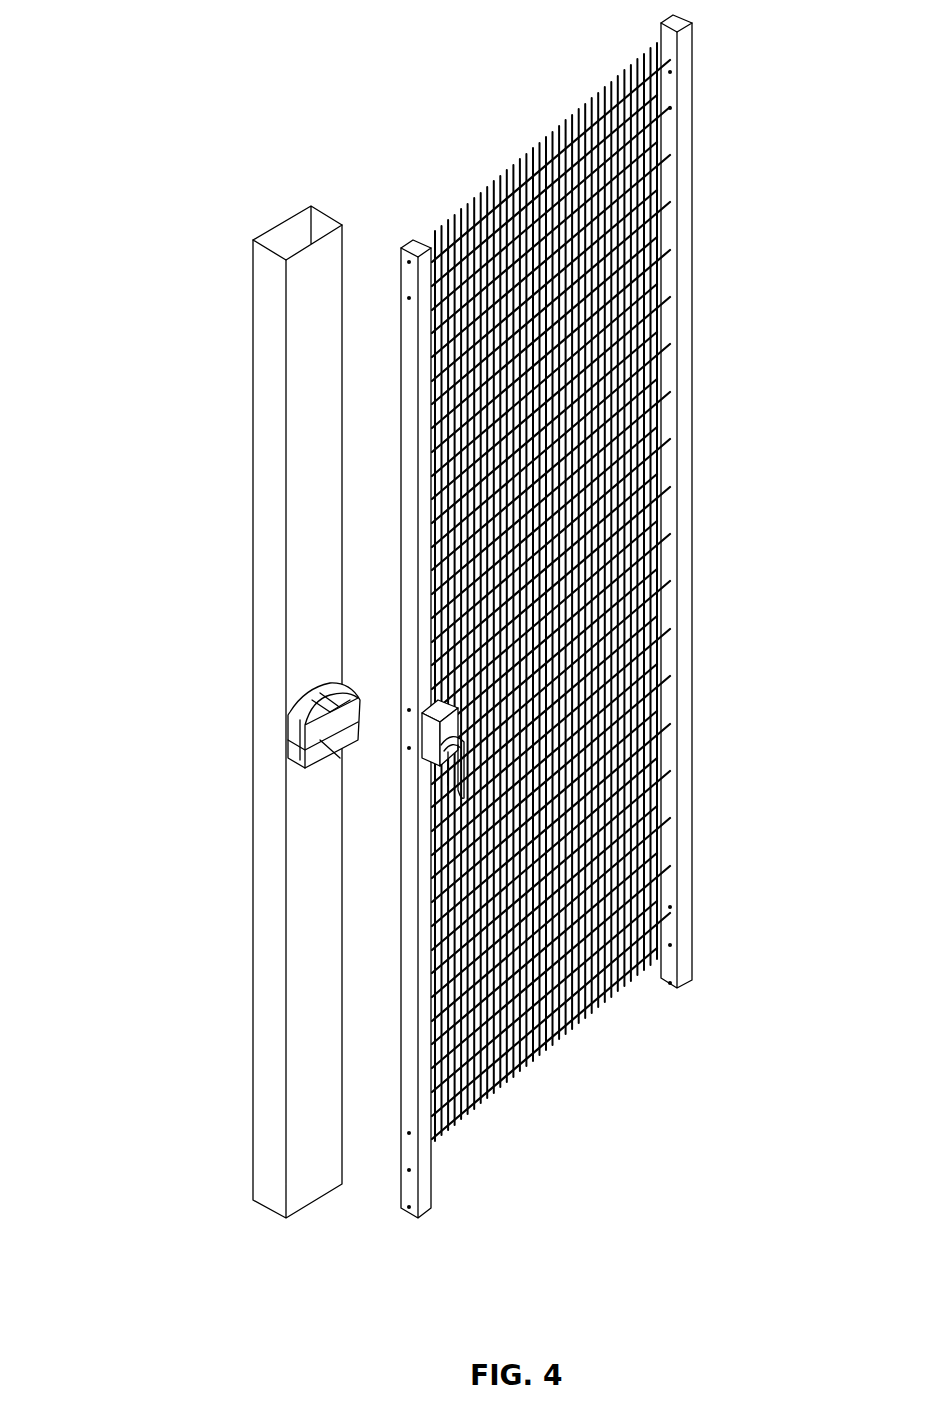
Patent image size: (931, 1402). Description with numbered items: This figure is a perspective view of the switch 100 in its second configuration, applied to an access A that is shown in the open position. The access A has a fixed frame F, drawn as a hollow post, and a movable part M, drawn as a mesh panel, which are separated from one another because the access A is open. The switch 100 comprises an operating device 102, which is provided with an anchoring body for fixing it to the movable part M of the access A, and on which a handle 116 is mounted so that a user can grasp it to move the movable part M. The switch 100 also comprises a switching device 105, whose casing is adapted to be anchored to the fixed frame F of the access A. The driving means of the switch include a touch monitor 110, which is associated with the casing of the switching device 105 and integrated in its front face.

The access A is at (212, 207).
The fixed frame F is at (262, 345).
The movable part M is at (697, 252).
The switch 100 is at (269, 788).
The operating device 102 is at (415, 700).
The switching device 105 is at (300, 688).
The touch monitor 110 is at (307, 762).
The handle 116 is at (455, 795).